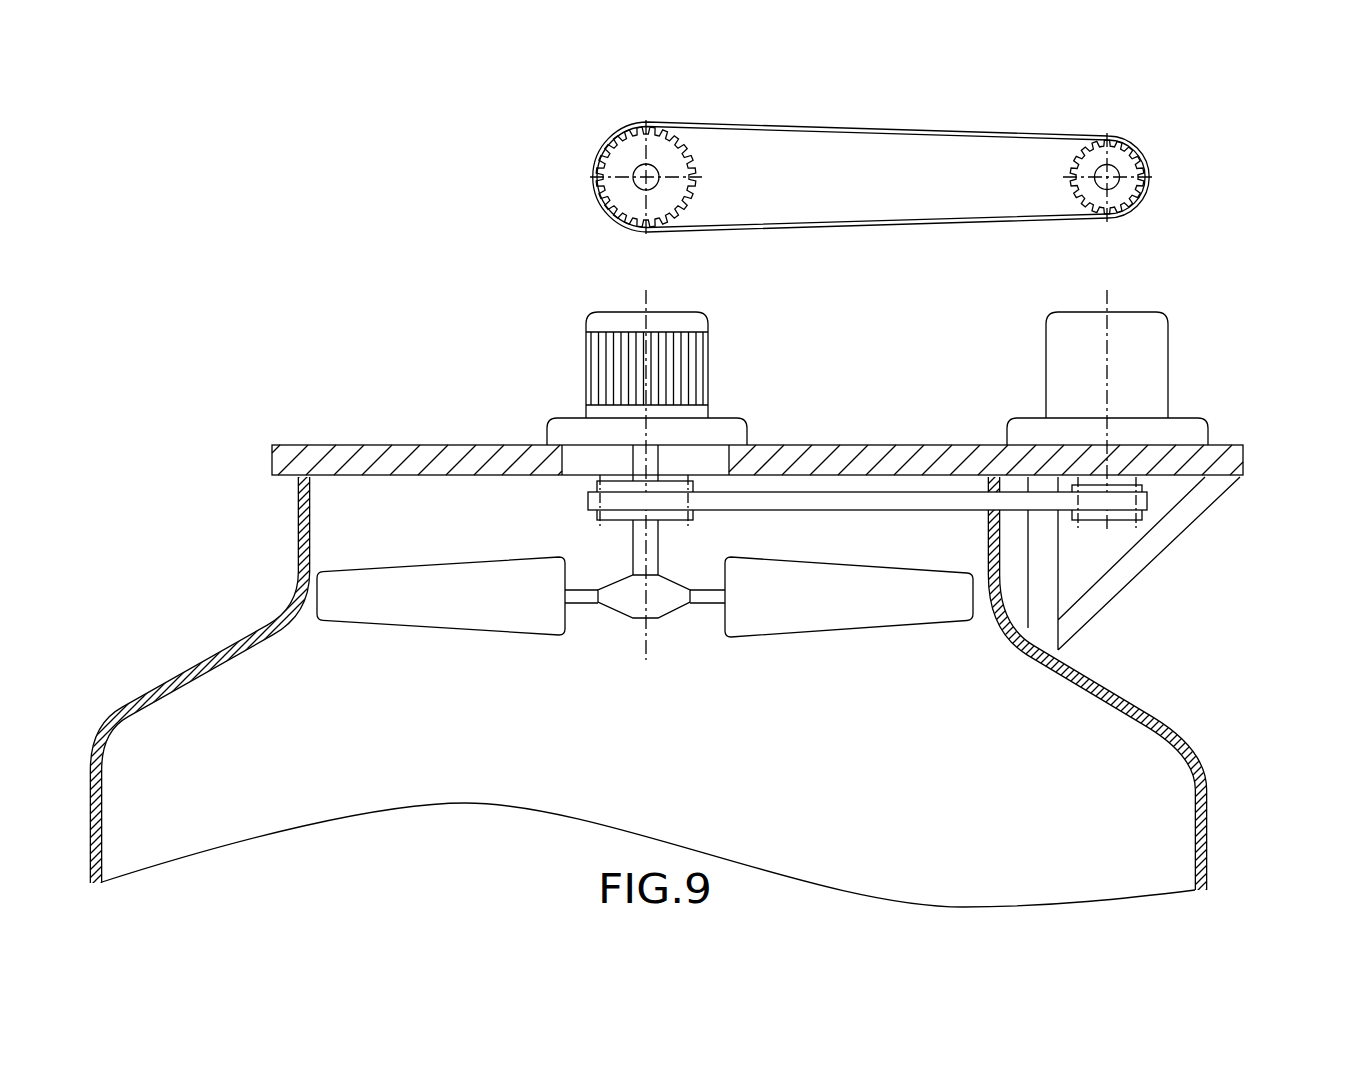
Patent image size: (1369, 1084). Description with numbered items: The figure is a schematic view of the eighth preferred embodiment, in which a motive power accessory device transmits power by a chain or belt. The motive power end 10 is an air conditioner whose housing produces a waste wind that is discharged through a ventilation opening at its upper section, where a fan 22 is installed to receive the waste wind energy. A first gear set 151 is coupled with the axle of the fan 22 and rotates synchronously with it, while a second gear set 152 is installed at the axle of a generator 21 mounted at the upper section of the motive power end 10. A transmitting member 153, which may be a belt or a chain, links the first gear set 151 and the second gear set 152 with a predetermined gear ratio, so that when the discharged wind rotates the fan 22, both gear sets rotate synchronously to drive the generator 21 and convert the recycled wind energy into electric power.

The motive power end 10 is at (1119, 668).
The generator 21 is at (1143, 482).
The fan 22 is at (915, 600).
The first gear set 151 is at (605, 137).
The second gear set 152 is at (1124, 170).
The transmitting member 153 is at (747, 129).